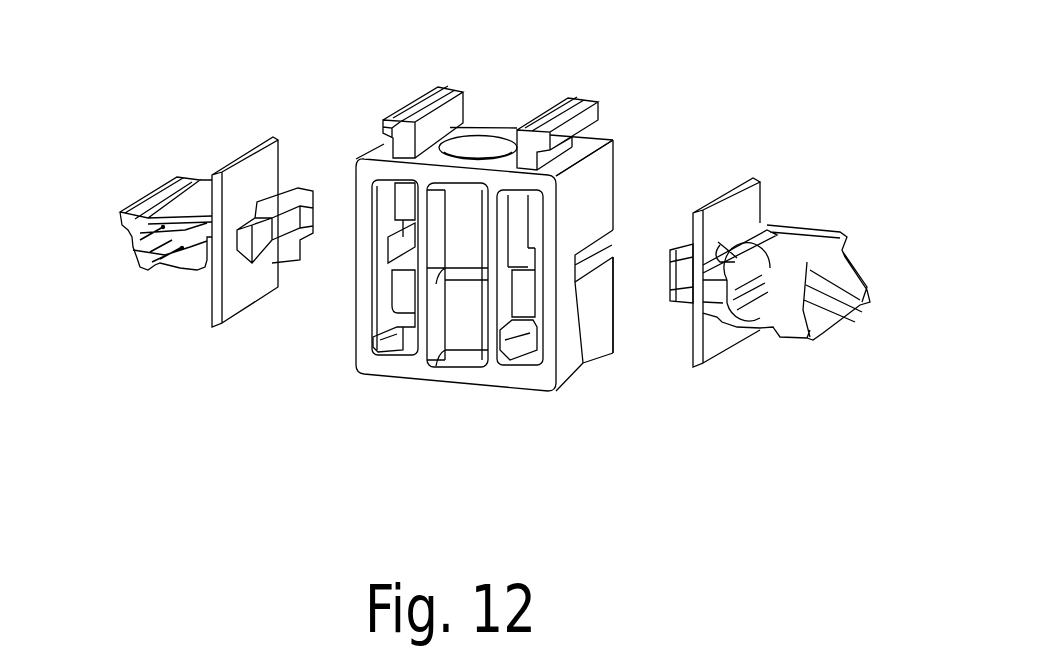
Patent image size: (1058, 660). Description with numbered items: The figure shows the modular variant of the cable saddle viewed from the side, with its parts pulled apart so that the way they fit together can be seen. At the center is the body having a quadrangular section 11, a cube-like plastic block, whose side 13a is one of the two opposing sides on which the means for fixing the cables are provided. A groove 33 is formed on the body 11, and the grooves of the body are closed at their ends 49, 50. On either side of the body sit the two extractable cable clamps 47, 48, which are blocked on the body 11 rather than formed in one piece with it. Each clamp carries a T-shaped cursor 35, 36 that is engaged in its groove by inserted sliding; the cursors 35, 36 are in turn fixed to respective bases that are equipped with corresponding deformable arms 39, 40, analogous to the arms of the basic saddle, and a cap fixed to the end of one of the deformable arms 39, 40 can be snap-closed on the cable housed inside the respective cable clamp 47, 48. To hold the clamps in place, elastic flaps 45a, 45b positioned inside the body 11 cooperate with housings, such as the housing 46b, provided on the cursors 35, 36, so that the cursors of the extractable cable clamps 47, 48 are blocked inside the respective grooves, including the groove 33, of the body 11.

The body having a quadrangular section 11 is at (413, 371).
The side 13a is at (590, 180).
The groove 33 is at (610, 243).
The cursor 35 is at (690, 247).
The cursor 36 is at (290, 202).
The deformable arm 39 is at (757, 317).
The deformable arm 40 is at (164, 268).
The elastic flap 45a is at (540, 253).
The elastic flap 45b is at (401, 247).
The housing 46b is at (295, 223).
The extractable cable clamp 47 is at (782, 403).
The extractable cable clamp 48 is at (152, 127).
The end of groove 49 is at (576, 283).
The end of groove 50 is at (388, 237).